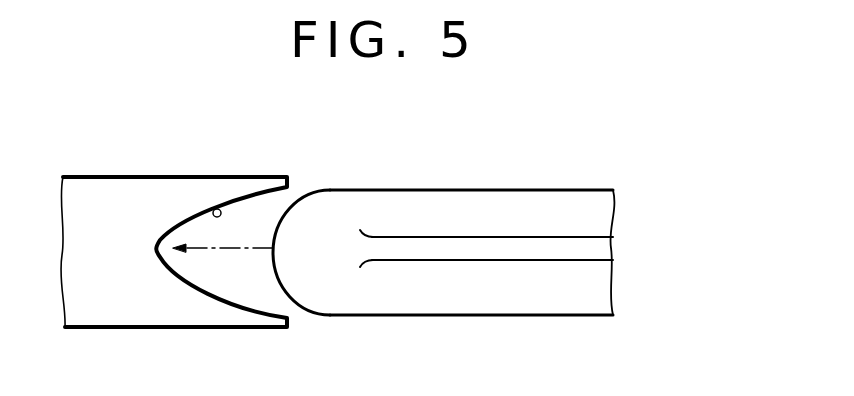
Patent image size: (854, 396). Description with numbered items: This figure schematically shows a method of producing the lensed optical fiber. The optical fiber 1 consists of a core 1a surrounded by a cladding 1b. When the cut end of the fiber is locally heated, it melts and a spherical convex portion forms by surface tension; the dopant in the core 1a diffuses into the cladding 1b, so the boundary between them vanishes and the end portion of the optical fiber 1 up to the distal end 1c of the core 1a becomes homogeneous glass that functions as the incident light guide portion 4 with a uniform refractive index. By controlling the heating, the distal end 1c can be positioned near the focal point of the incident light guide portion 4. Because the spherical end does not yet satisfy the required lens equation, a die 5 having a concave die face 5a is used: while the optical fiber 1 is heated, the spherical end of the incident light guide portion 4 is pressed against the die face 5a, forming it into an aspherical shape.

The optical fiber 1 is at (698, 183).
The core 1a is at (593, 250).
The cladding 1b is at (593, 213).
The distal end of the fiber core 1c is at (371, 252).
The incident light guide portion 4 is at (318, 208).
The die 5 is at (133, 177).
The concave die face 5a is at (217, 209).